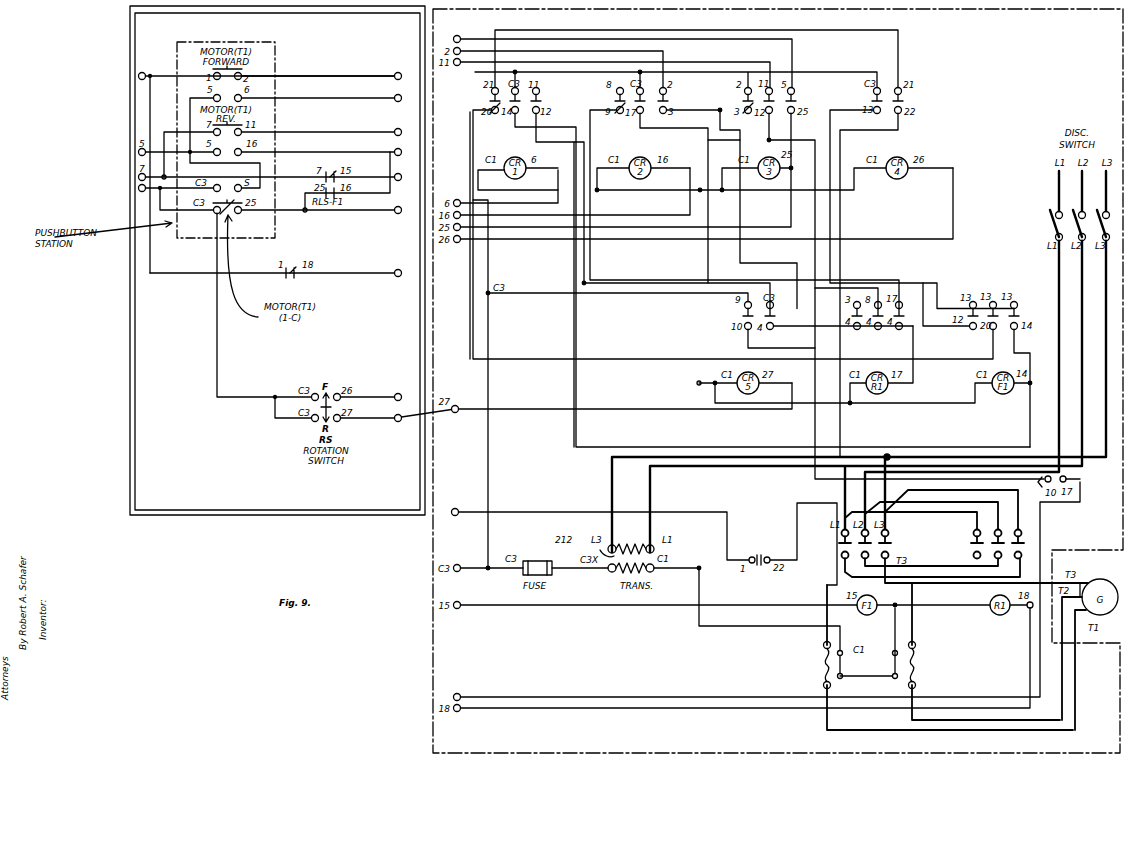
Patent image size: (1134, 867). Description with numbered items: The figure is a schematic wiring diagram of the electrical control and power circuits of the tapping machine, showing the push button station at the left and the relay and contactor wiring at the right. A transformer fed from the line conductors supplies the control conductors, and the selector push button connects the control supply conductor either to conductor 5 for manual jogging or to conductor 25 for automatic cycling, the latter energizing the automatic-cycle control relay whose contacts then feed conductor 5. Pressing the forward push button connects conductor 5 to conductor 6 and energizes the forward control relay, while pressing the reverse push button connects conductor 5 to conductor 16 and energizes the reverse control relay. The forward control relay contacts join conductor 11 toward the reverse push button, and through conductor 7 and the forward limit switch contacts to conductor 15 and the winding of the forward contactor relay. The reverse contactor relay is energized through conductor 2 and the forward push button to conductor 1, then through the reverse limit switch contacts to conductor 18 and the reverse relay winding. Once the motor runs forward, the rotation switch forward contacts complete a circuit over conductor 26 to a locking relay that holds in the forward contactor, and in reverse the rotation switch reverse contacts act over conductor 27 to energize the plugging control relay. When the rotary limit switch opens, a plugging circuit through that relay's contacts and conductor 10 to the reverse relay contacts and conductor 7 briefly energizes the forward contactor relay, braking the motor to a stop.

The conductor 1 is at (267, 71).
The conductor 2 is at (327, 77).
The conductor 5 is at (618, 61).
The conductor 6 is at (327, 99).
The conductor 7 is at (762, 592).
The conductor 10 is at (594, 534).
The conductor 11 is at (330, 133).
The conductor 15 is at (282, 178).
The conductor 16 is at (282, 153).
The conductor 18 is at (284, 274).
The conductor 25 is at (330, 211).
The conductor 26 is at (379, 395).
The conductor 27 is at (396, 415).